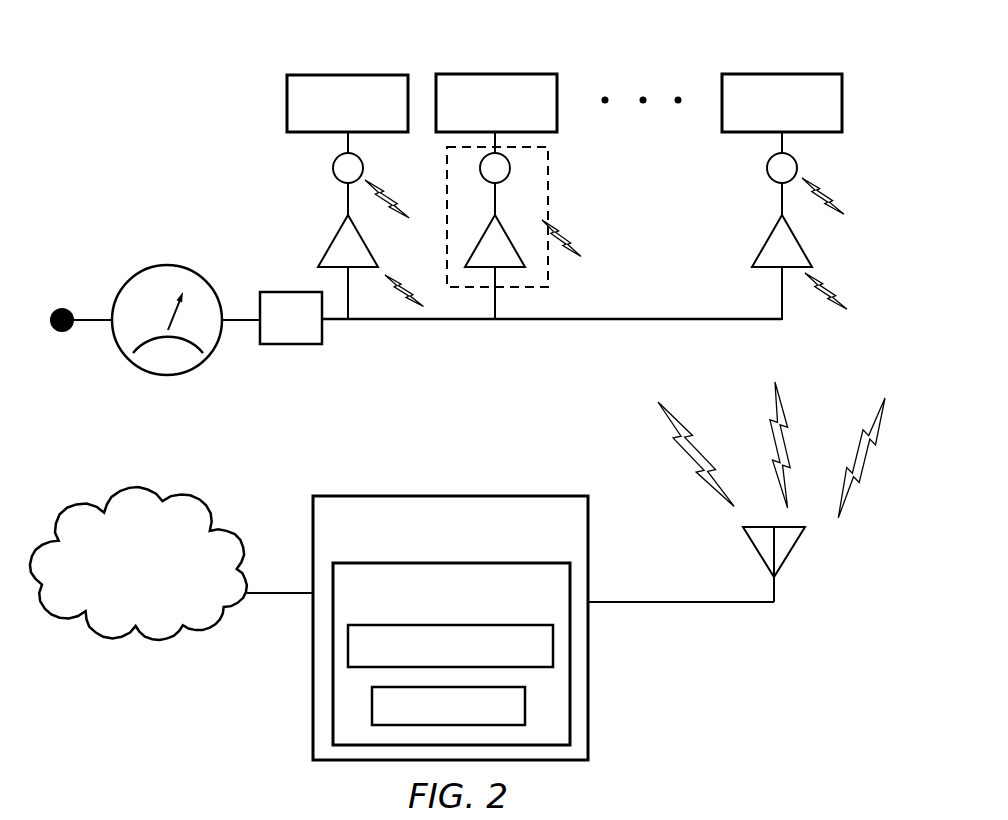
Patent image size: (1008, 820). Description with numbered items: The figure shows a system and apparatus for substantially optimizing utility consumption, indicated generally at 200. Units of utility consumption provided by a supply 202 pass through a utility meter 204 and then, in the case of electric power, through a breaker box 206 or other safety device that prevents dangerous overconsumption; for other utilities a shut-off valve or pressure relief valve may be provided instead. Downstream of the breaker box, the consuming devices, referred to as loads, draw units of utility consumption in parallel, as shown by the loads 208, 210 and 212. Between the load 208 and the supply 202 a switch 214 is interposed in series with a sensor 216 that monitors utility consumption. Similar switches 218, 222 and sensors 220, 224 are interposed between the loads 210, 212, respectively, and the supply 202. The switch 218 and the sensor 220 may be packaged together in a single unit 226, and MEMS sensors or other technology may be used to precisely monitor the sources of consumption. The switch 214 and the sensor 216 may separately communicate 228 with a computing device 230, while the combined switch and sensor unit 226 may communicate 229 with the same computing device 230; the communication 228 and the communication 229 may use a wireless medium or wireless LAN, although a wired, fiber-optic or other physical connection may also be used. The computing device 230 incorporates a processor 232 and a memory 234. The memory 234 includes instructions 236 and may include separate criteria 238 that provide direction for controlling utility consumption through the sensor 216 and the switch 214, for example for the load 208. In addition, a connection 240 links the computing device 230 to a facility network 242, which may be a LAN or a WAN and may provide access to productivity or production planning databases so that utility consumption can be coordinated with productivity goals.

The system and apparatus for optimizing utility consumption 200 is at (464, 391).
The supply 202 is at (85, 346).
The utility meter 204 is at (142, 298).
The breaker box 206 is at (314, 341).
The load 208 is at (317, 77).
The load 210 is at (480, 78).
The load 212 is at (757, 78).
The switch 214 is at (312, 236).
The sensor 216 is at (301, 165).
The switch 218 is at (456, 241).
The sensor 220 is at (545, 168).
The switch 222 is at (819, 241).
The sensor 224 is at (738, 179).
The switch and sensor unit 226 is at (518, 230).
The communication 228 is at (617, 339).
The communication 229 is at (665, 362).
The computing device 230 is at (506, 628).
The processor 232 is at (578, 543).
The memory 234 is at (516, 654).
The instructions 236 is at (504, 648).
The criteria 238 is at (516, 710).
The connection 240 is at (255, 628).
The facility network 242 is at (155, 545).